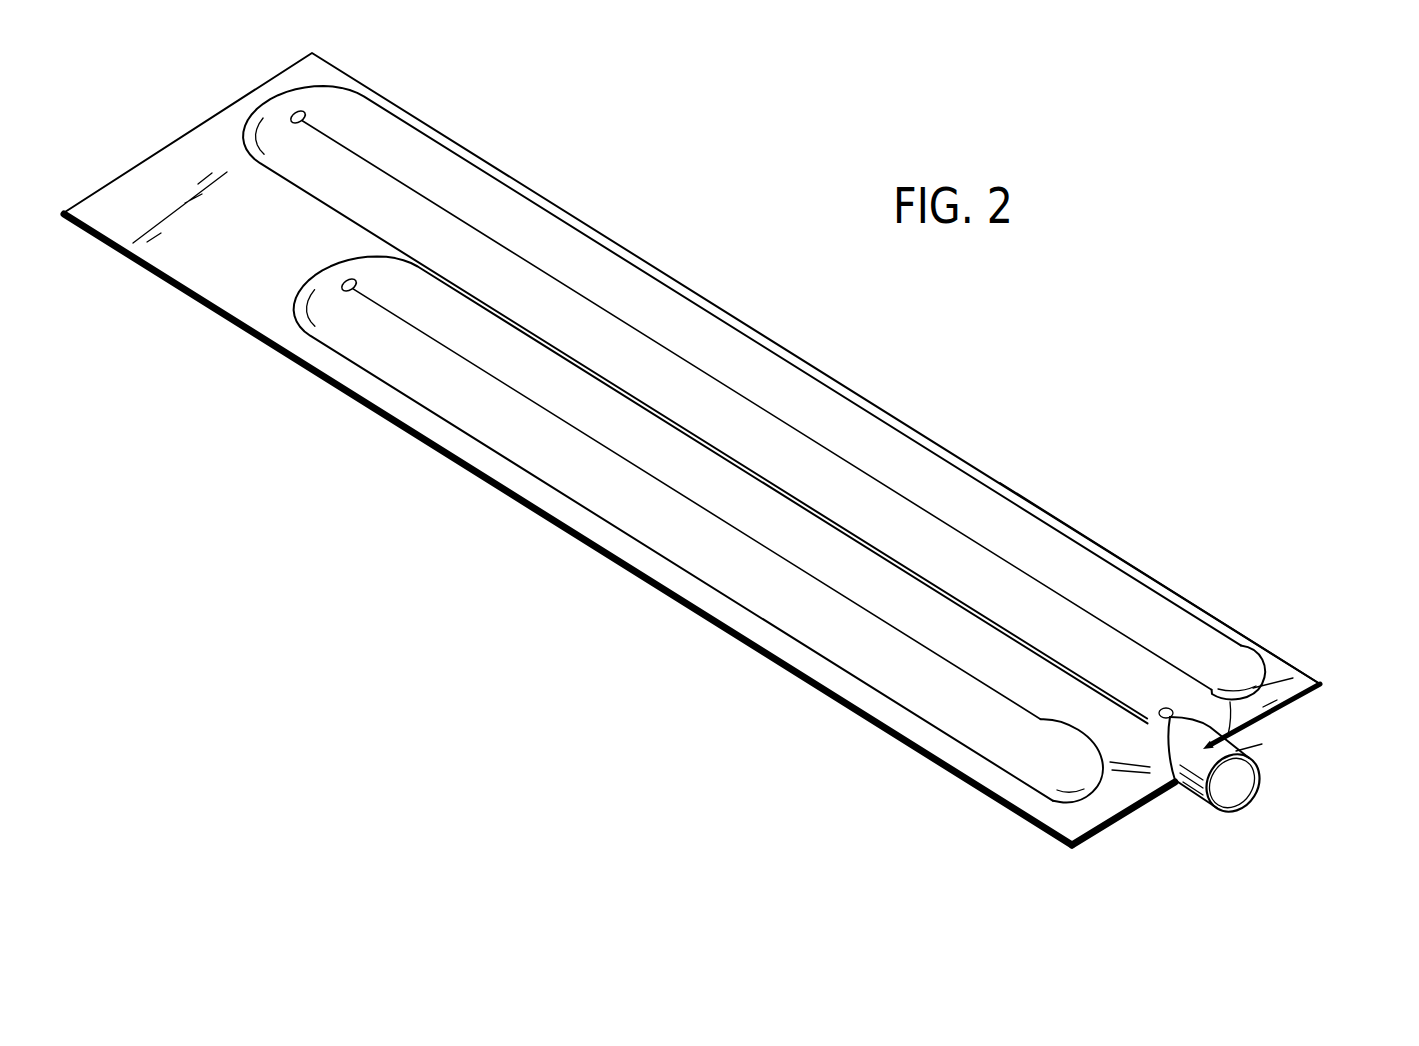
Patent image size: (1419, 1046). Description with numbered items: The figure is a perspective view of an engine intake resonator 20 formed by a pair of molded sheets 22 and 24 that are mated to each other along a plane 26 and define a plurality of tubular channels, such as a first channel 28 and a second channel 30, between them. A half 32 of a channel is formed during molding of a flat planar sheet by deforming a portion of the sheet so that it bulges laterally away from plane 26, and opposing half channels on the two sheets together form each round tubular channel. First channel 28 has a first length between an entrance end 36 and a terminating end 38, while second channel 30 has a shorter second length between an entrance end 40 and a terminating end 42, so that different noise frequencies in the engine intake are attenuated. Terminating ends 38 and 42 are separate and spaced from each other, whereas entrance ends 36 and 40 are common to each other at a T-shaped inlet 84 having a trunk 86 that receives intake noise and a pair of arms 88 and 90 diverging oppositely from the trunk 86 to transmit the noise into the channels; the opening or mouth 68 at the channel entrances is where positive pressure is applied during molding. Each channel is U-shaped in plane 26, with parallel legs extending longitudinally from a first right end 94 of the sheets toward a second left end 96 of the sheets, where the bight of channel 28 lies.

The engine intake resonator 20 is at (617, 183).
The molded sheet 22 is at (1321, 683).
The molded sheet 24 is at (1324, 687).
The plane 26 is at (1336, 681).
The first channel 28 is at (914, 559).
The second channel 30 is at (884, 612).
The half of channel 32 is at (750, 423).
The entrance end 36 is at (1243, 653).
The terminating end 38 is at (1212, 678).
The entrance end 40 is at (1117, 748).
The terminating end 42 is at (1062, 784).
The opening or mouth 68 is at (1233, 797).
The T-shaped inlet 84 is at (1262, 740).
The trunk 86 is at (1186, 800).
The arm 88 is at (1284, 724).
The arm 90 is at (1147, 768).
The first right end 94 is at (1102, 838).
The second left end 96 is at (187, 133).